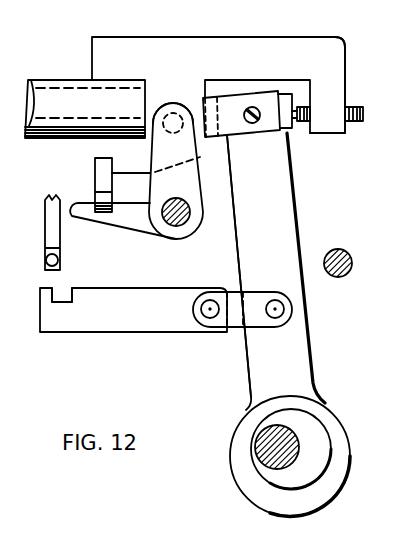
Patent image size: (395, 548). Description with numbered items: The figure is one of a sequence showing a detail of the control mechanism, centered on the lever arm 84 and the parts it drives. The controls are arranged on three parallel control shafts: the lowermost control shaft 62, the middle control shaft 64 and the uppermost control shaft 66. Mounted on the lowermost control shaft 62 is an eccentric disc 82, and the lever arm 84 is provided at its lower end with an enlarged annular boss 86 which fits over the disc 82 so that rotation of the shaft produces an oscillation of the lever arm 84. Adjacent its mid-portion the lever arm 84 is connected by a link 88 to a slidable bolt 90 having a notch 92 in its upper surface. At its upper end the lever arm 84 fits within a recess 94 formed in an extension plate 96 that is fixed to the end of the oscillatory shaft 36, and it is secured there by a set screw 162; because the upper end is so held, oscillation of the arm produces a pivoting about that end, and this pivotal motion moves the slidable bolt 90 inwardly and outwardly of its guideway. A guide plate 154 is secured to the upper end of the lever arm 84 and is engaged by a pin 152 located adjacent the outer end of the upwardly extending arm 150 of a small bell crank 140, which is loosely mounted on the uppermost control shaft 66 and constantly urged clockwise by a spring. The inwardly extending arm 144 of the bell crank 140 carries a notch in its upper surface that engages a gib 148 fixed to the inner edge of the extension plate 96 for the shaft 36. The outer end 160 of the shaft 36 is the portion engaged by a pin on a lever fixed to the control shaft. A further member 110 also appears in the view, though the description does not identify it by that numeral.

The oscillatory shaft 36 is at (75, 97).
The lowermost control shaft 62 is at (263, 455).
The middle control shaft 64 is at (345, 251).
The uppermost control shaft 66 is at (190, 213).
The eccentric disc 82 is at (317, 457).
The lever arm 84 is at (292, 184).
The annular boss 86 is at (338, 420).
The link 88 is at (238, 330).
The slidable bolt 90 is at (150, 322).
The notch 92 is at (62, 293).
The recess 94 is at (252, 86).
The extension plate 96 is at (334, 66).
The rod 110 is at (55, 228).
The bell crank 140 is at (182, 233).
The inwardly extending arm 144 is at (113, 222).
The gib 148 is at (98, 180).
The upwardly extending arm 150 is at (193, 175).
The pin 152 is at (174, 108).
The guide plate 154 is at (188, 100).
The outer end of the shaft 160 is at (152, 88).
The set screw 162 is at (351, 100).